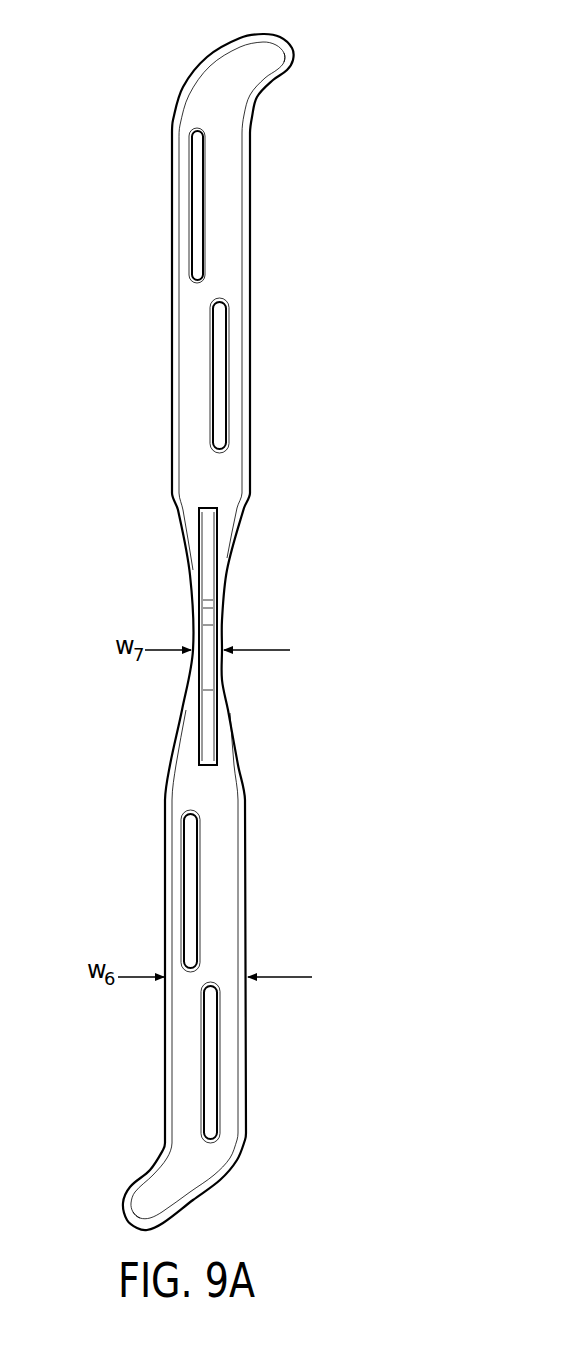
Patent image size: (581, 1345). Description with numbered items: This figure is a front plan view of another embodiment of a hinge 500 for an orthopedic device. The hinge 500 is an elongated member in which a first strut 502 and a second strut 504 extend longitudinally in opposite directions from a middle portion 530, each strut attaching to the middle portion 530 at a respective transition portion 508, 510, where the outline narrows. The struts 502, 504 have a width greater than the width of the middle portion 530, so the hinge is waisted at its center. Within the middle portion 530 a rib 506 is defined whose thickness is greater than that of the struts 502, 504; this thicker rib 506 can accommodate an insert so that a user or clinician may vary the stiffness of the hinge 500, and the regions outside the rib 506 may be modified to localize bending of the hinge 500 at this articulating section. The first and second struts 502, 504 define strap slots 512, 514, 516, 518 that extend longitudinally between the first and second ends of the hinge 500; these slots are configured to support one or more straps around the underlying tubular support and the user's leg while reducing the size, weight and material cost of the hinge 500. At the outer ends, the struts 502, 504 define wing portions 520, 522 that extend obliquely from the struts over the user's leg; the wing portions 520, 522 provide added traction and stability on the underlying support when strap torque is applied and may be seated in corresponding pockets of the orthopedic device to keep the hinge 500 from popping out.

The hinge 500 is at (156, 461).
The first strut 502 is at (220, 272).
The second strut 504 is at (240, 913).
The rib 506 is at (216, 607).
The transition portion 508 is at (188, 562).
The transition portion 510 is at (232, 697).
The strap slot 512 is at (197, 253).
The strap slot 514 is at (219, 399).
The strap slot 516 is at (193, 832).
The strap slot 518 is at (210, 1075).
The wing portion 520 is at (286, 63).
The wing portion 522 is at (142, 1183).
The middle portion 530 is at (216, 627).